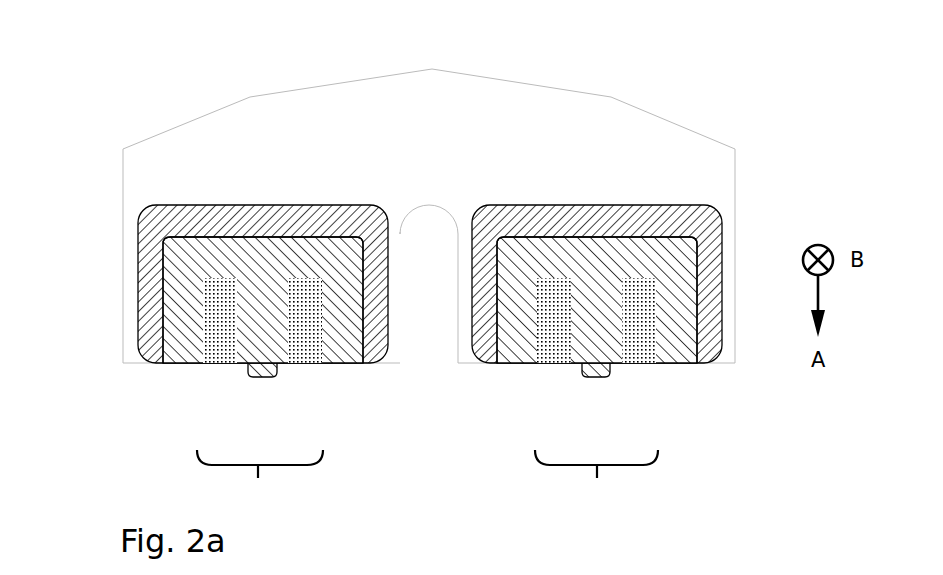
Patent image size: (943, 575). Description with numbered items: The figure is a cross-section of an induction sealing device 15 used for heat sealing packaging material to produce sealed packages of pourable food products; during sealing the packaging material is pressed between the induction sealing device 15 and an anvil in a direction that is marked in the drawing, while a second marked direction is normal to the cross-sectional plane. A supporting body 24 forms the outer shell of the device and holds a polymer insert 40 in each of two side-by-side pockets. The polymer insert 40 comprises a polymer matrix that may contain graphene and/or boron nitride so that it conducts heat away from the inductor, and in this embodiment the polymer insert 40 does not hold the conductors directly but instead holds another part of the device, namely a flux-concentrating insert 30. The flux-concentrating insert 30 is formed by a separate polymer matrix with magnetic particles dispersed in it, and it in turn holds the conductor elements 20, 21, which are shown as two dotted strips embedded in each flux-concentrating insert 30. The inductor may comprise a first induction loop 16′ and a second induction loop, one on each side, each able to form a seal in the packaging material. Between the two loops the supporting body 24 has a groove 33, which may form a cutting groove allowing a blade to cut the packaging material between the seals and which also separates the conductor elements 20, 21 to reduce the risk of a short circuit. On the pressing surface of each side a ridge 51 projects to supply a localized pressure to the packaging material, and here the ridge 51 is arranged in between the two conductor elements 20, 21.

The induction sealing device 15 is at (731, 57).
The supporting body 24 is at (222, 155).
The groove 33 is at (444, 296).
The polymer insert 40 is at (152, 232).
The flux-concentrating insert 30 is at (165, 332).
The conductor element 20 is at (308, 337).
The conductor element 21 is at (223, 335).
The ridge 51 is at (262, 379).
The first induction loop 16′ is at (260, 484).